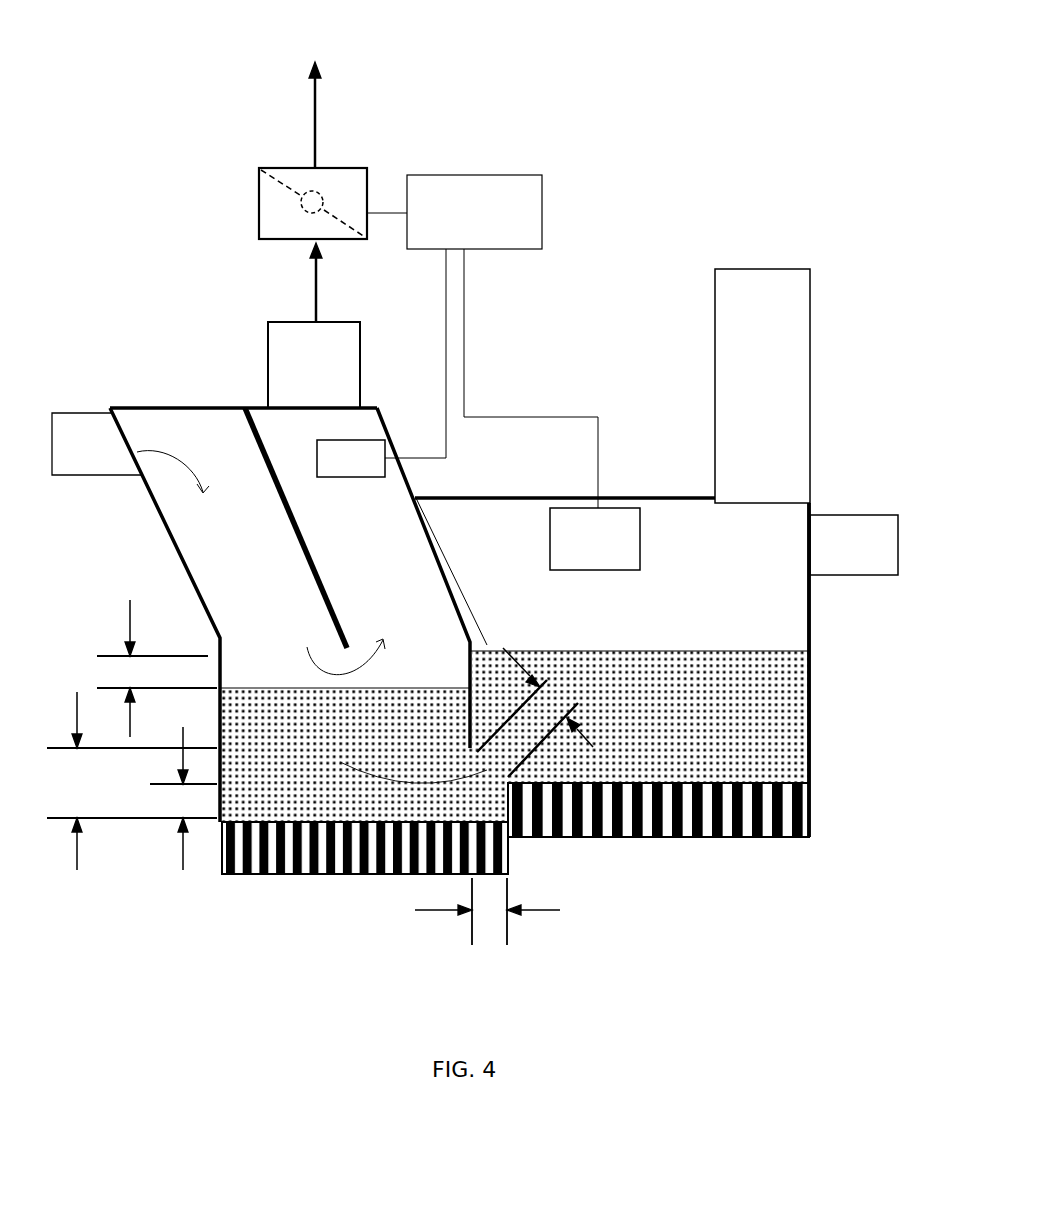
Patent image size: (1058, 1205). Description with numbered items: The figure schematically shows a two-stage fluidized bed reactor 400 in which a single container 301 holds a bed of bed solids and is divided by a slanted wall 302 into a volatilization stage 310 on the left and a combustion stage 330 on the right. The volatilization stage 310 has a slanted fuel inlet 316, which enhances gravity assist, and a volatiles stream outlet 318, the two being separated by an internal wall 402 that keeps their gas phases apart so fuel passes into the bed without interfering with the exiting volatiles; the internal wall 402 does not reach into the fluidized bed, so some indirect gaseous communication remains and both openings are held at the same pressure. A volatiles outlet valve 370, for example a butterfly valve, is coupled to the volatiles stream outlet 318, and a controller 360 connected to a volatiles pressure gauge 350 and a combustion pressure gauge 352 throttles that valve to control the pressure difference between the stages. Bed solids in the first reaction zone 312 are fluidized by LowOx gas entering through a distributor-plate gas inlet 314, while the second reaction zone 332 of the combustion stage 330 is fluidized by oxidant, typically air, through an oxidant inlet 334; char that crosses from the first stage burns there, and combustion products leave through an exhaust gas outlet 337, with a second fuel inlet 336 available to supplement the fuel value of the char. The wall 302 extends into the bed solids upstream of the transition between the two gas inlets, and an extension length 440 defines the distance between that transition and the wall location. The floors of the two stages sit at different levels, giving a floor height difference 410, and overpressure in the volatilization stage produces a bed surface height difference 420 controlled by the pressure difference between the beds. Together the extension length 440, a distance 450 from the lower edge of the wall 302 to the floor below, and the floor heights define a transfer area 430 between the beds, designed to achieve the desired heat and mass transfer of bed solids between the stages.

The system 400 is at (245, 64).
The volatilization stage 310 is at (210, 405).
The fuel inlet 316 is at (97, 444).
The volatiles stream outlet 318 is at (314, 325).
The volatiles outlet valve 370 is at (258, 207).
The controller 360 is at (491, 341).
The volatiles pressure gauge 350 is at (351, 458).
The combustion pressure gauge 352 is at (595, 539).
The internal wall 402 is at (315, 580).
The wall 302 is at (462, 591).
The combustion stage 330 is at (612, 667).
The exhaust gas outlet 337 is at (762, 386).
The second fuel inlet 336 is at (854, 545).
The first reaction zone 312 is at (364, 755).
The second reaction zone 332 is at (639, 717).
The oxidant inlet 334 is at (810, 822).
The gas inlet 314 is at (222, 858).
The container 301 is at (810, 773).
The transfer area 430 is at (556, 713).
The bed surface height difference 420 is at (157, 668).
The distance from the lower edge of the wall to the floor 450 is at (132, 781).
The floor height difference 410 is at (183, 798).
The extension length 440 is at (509, 911).